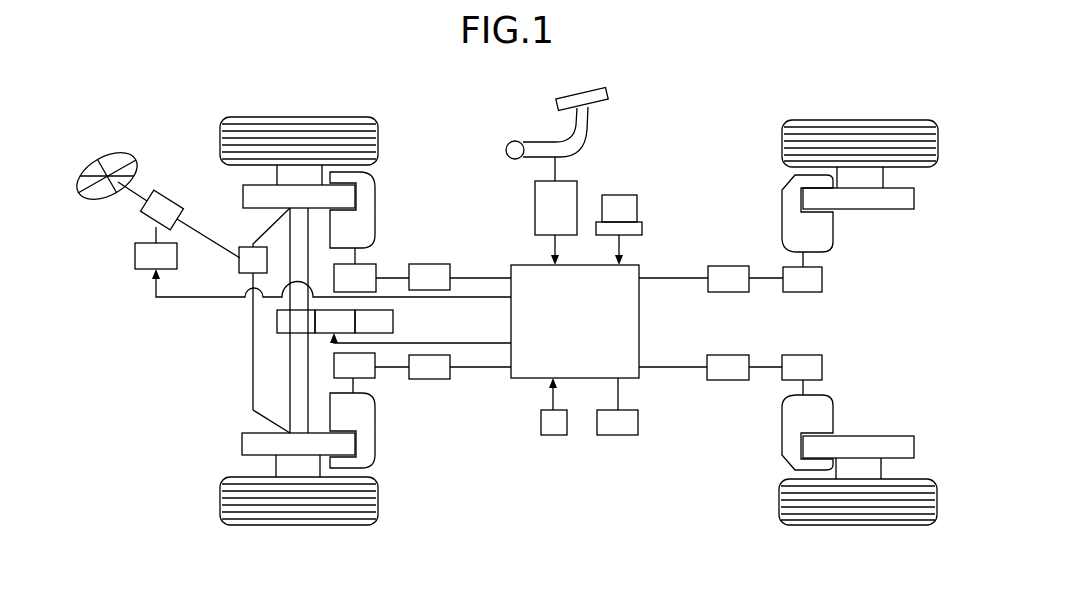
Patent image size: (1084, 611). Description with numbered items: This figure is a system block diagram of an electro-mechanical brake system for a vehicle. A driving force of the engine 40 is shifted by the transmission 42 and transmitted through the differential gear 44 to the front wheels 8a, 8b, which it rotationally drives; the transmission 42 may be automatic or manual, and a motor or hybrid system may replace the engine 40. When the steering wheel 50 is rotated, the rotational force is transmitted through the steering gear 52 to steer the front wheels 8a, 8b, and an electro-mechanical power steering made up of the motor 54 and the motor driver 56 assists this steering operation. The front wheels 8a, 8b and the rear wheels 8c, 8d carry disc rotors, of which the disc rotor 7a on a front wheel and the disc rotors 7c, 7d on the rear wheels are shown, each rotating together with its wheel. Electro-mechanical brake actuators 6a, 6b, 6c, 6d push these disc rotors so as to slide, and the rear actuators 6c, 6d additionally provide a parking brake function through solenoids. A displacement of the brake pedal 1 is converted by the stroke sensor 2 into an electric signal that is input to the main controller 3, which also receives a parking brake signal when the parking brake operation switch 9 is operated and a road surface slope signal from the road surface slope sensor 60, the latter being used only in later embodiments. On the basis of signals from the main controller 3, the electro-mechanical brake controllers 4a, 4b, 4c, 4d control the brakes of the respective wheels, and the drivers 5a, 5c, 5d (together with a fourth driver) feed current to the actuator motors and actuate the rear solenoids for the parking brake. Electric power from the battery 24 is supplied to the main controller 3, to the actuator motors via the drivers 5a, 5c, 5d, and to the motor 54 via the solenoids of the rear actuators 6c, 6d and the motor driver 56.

The brake pedal 1 is at (557, 134).
The stroke sensor 2 is at (529, 223).
The main controller 3 is at (569, 351).
The electro-mechanical brake controller 4a is at (443, 255).
The electro-mechanical brake controller 4b is at (443, 395).
The electro-mechanical brake controller 4c is at (711, 250).
The electro-mechanical brake controller 4d is at (710, 399).
The driver 5a is at (372, 256).
The driver 5c is at (610, 345).
The driver 5d is at (834, 367).
The electro-mechanical brake actuator 6a is at (379, 217).
The electro-mechanical brake actuator 6b is at (381, 426).
The electro-mechanical brake actuator 6c is at (838, 221).
The electro-mechanical brake actuator 6d is at (837, 425).
The disc rotor 7a is at (268, 191).
The disc rotor 7c is at (558, 321).
The disc rotor 7d is at (868, 417).
The front wheel 8a is at (299, 126).
The front wheel 8b is at (299, 521).
The rear wheel 8c is at (860, 125).
The rear wheel 8d is at (858, 522).
The parking brake operation switch 9 is at (619, 200).
The battery 24 is at (617, 437).
The engine 40 is at (386, 322).
The transmission 42 is at (269, 320).
The differential gear 44 is at (261, 322).
The steering wheel 50 is at (107, 150).
The steering gear 52 is at (204, 307).
The motor 54 is at (162, 188).
The motor driver 56 is at (293, 270).
The road surface slope sensor 60 is at (551, 437).